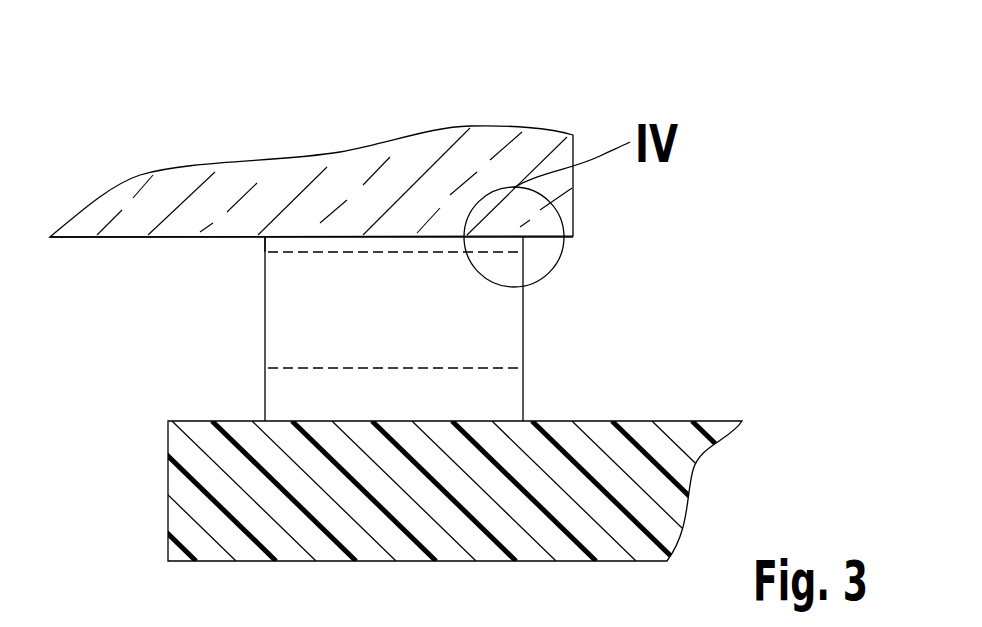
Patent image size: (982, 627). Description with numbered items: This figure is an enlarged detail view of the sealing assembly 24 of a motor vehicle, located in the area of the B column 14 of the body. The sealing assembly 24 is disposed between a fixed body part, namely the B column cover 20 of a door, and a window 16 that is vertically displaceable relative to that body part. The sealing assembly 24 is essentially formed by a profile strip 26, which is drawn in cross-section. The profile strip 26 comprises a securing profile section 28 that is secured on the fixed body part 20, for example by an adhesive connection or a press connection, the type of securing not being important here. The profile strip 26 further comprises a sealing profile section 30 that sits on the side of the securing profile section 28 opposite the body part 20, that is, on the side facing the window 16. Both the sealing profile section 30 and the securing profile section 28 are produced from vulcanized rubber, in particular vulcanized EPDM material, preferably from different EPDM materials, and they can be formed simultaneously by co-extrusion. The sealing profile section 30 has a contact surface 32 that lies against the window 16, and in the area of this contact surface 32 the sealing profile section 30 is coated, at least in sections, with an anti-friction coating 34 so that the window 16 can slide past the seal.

The B column 14 is at (718, 185).
The window 16 is at (420, 153).
The B column cover 20 is at (678, 500).
The sealing assembly 24 is at (598, 287).
The profile strip 26 is at (588, 347).
The securing profile section 28 is at (415, 410).
The sealing profile section 30 is at (415, 330).
The contact surface 32 is at (340, 236).
The anti-friction coating 34 is at (267, 241).